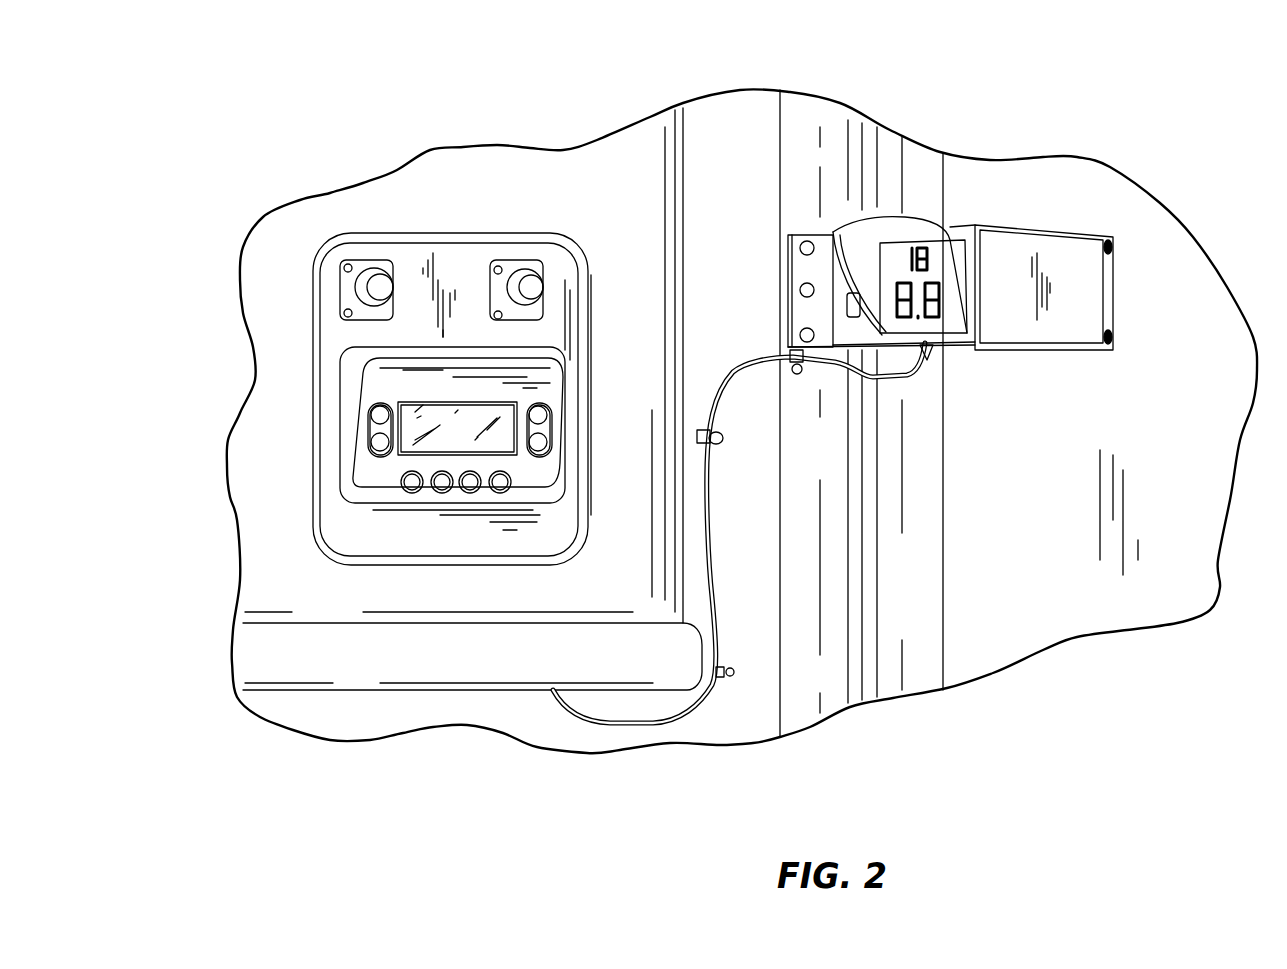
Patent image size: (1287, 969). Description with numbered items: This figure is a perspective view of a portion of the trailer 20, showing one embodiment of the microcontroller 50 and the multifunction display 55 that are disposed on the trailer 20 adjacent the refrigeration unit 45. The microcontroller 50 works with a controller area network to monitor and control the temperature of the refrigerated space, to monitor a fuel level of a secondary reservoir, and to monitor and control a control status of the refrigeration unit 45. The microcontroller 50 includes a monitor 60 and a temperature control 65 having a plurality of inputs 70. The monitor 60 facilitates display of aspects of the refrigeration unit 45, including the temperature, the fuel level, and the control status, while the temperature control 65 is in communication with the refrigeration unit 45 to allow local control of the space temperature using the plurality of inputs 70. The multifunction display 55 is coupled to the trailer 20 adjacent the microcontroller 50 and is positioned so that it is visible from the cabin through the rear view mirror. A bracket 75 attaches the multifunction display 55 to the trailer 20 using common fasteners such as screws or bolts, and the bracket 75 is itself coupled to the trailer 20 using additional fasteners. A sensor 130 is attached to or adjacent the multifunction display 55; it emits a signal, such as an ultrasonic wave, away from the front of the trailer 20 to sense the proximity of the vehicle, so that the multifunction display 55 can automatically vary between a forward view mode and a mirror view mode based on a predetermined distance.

The trailer 20 is at (747, 123).
The refrigeration unit 45 is at (447, 192).
The microcontroller 50 is at (317, 317).
The multifunction display 55 is at (935, 360).
The monitor 60 is at (370, 420).
The temperature control 65 is at (548, 447).
The plurality of inputs 70 is at (443, 484).
The bracket 75 is at (800, 263).
The sensor 130 is at (850, 308).